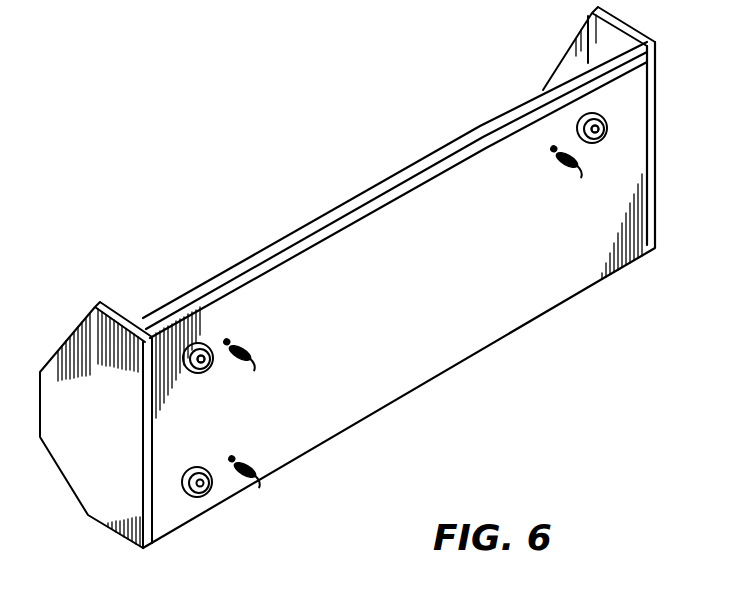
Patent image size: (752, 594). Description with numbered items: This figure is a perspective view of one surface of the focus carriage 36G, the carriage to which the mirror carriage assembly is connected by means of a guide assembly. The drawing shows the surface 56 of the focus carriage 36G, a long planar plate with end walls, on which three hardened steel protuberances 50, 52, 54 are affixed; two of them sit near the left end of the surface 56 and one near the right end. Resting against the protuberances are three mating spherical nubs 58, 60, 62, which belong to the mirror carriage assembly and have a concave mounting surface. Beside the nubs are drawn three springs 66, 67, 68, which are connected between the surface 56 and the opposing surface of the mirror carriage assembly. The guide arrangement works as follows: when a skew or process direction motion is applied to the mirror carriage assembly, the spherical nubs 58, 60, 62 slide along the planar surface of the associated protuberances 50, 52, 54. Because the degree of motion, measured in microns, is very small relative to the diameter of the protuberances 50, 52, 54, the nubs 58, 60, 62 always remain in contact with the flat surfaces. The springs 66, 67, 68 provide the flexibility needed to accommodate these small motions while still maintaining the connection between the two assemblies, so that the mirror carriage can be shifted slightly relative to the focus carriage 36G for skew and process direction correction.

The focus carriage 36G is at (547, 87).
The hardened steel protuberance 50 is at (212, 497).
The hardened steel protuberance 52 is at (209, 345).
The hardened steel protuberance 54 is at (597, 117).
The surface 56 is at (518, 305).
The spherical nub 58 is at (213, 468).
The spherical nub 60 is at (212, 346).
The spherical nub 62 is at (603, 132).
The spring 66 is at (257, 466).
The spring 67 is at (252, 345).
The spring 68 is at (573, 170).